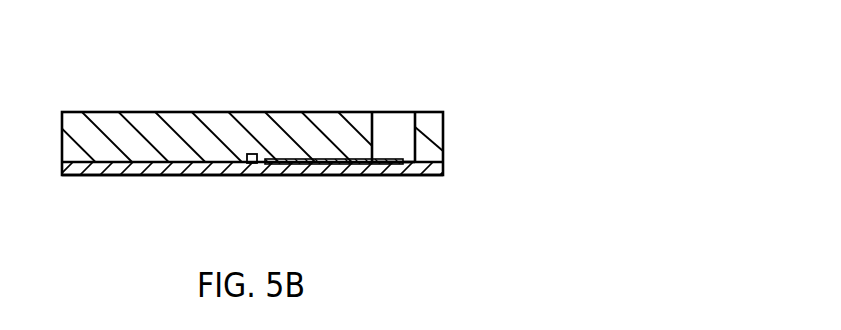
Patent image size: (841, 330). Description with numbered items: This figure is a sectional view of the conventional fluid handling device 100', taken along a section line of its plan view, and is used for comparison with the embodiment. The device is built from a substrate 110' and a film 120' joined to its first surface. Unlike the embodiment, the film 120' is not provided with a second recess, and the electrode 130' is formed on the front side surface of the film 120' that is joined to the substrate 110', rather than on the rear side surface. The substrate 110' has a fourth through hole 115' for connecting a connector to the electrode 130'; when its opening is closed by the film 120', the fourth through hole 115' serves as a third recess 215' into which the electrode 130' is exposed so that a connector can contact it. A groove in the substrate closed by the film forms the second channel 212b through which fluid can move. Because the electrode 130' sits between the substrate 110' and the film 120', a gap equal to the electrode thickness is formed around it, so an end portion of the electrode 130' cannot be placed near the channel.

The conventional fluid handling device 100' is at (284, 96).
The substrate 110' is at (282, 137).
The fourth through hole 115' is at (363, 100).
The film 120' is at (290, 180).
The electrode 130' is at (343, 199).
The third recess 215' is at (411, 106).
The second channel 212b is at (255, 164).